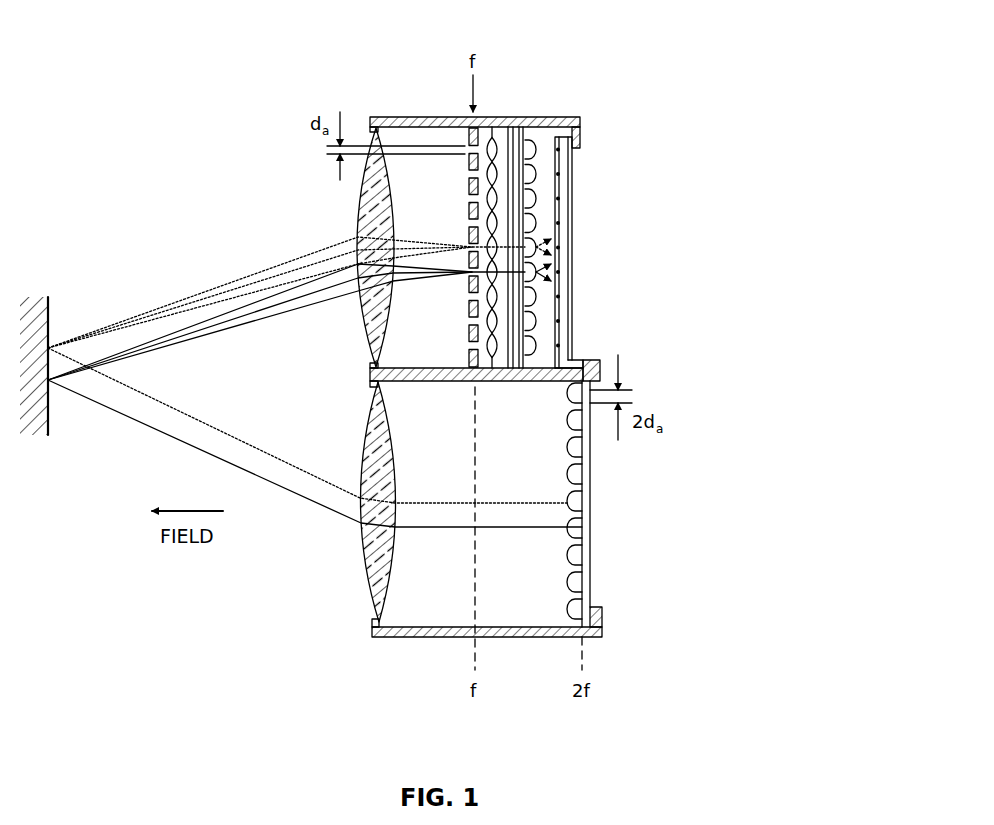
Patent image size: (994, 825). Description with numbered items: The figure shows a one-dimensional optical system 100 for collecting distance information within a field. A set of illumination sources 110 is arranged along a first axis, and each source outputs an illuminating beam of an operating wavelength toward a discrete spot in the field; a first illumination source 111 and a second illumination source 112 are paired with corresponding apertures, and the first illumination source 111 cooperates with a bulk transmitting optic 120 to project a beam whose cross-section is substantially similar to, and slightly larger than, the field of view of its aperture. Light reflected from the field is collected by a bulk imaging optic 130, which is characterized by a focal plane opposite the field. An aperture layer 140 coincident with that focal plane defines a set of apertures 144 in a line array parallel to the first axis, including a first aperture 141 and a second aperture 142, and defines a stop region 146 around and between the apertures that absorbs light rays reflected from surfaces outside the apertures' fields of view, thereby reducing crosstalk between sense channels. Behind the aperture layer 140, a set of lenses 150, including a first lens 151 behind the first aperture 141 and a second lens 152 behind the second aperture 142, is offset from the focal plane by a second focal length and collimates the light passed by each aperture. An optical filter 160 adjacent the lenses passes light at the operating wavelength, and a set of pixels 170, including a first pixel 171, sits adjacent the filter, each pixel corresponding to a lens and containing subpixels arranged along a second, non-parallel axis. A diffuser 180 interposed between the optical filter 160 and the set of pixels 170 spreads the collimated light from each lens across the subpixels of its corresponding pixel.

The one-dimensional optical system 100 is at (753, 45).
The set of illumination sources 110 is at (625, 501).
The first illumination source 111 is at (577, 610).
The second illumination source 112 is at (577, 583).
The bulk transmitting optic 120 is at (363, 578).
The bulk imaging optic 130 is at (359, 217).
The aperture layer 140 is at (470, 128).
The first aperture 141 is at (467, 343).
The second aperture 142 is at (467, 317).
The set of apertures 144 is at (367, 222).
The stop region 146 is at (466, 183).
The set of lenses 150 is at (567, 205).
The first lens 151 is at (488, 345).
The second lens 152 is at (497, 318).
The optical filter 160 is at (516, 128).
The set of pixels 170 is at (599, 252).
The first pixel 171 is at (573, 353).
The diffuser 180 is at (580, 125).